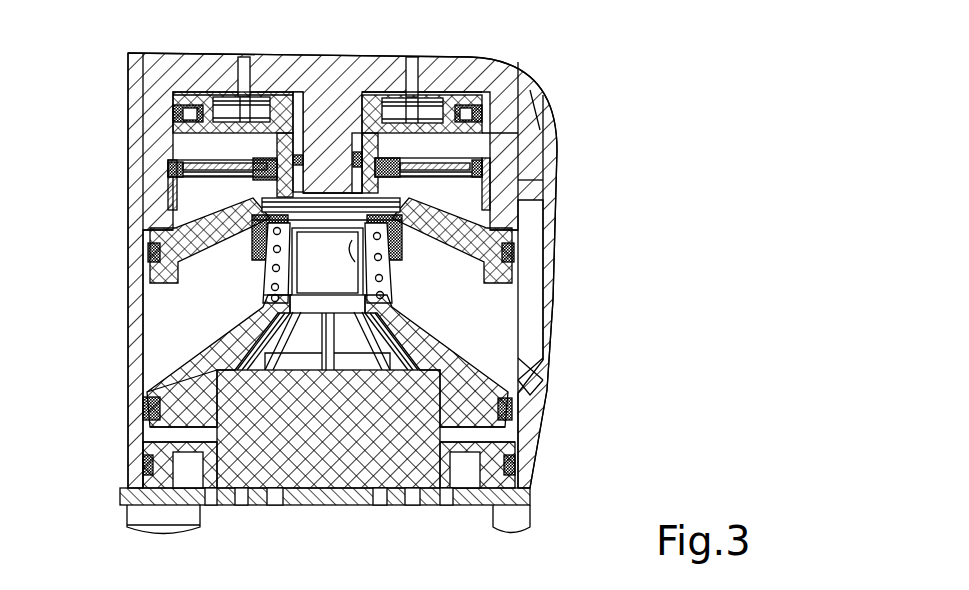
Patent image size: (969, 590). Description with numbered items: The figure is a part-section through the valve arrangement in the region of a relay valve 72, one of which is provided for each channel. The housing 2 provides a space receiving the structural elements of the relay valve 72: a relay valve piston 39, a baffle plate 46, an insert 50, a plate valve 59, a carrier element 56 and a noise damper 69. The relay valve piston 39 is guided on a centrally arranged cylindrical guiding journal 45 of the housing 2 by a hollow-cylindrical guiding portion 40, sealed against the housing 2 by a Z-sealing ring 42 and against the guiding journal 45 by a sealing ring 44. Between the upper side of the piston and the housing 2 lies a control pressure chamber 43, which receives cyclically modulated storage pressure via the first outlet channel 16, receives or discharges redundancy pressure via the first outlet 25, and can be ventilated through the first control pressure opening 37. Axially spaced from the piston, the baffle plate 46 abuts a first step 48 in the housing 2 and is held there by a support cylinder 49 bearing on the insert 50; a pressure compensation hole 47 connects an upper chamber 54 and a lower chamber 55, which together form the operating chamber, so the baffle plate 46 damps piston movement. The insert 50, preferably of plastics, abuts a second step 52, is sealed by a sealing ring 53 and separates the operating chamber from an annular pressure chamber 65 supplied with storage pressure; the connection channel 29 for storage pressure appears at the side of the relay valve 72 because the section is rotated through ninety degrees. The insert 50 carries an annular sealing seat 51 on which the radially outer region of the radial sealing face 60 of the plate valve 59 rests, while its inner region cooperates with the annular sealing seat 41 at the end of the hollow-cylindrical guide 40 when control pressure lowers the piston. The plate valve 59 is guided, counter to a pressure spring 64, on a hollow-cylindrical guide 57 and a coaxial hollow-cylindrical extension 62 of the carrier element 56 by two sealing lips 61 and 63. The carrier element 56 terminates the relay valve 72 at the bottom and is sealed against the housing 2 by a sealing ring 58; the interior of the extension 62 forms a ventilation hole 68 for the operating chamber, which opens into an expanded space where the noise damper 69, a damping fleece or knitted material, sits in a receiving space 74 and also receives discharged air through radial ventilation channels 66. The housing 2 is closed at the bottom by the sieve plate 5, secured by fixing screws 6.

The housing 2 is at (130, 92).
The sieve plate 5 is at (532, 500).
The fixing screws 6 is at (127, 515).
The first outlet channel 16 is at (412, 75).
The first outlet 25 is at (460, 100).
The connection channel 29 is at (538, 180).
The first control pressure opening 37 is at (242, 75).
The relay valve piston 39 is at (203, 146).
The hollow-cylindrical guiding portion 40 is at (305, 80).
The annular sealing seat 41 is at (490, 197).
The Z-sealing ring 42 is at (514, 60).
The control pressure chamber 43 is at (432, 105).
The sealing ring 44 is at (373, 90).
The cylindrical guiding journal 45 is at (340, 100).
The baffle plate 46 is at (488, 162).
The pressure compensation hole 47 is at (200, 210).
The first step 48 is at (485, 142).
The support cylinder 49 is at (185, 180).
The insert 50 is at (395, 262).
The annular sealing seat 51 is at (262, 285).
The second step 52 is at (500, 245).
The sealing ring 53 is at (150, 255).
The upper chamber 54 is at (530, 90).
The lower chamber 55 is at (200, 225).
The carrier element 56 is at (490, 350).
The hollow-cylindrical guide 57 is at (245, 318).
The sealing ring 58 is at (150, 405).
The plate valve 59 is at (495, 277).
The radial sealing face 60 is at (405, 243).
The sealing lip 61 is at (255, 300).
The hollow-cylindrical extension 62 is at (303, 262).
The sealing lip 63 is at (395, 273).
The pressure spring 64 is at (490, 313).
The pressure chamber 65 is at (545, 365).
The radial ventilation channels 66 is at (500, 440).
The ventilation hole 68 is at (341, 285).
The noise damper 69 is at (220, 370).
The relay valve 72 is at (580, 378).
The receiving space 74 is at (140, 468).